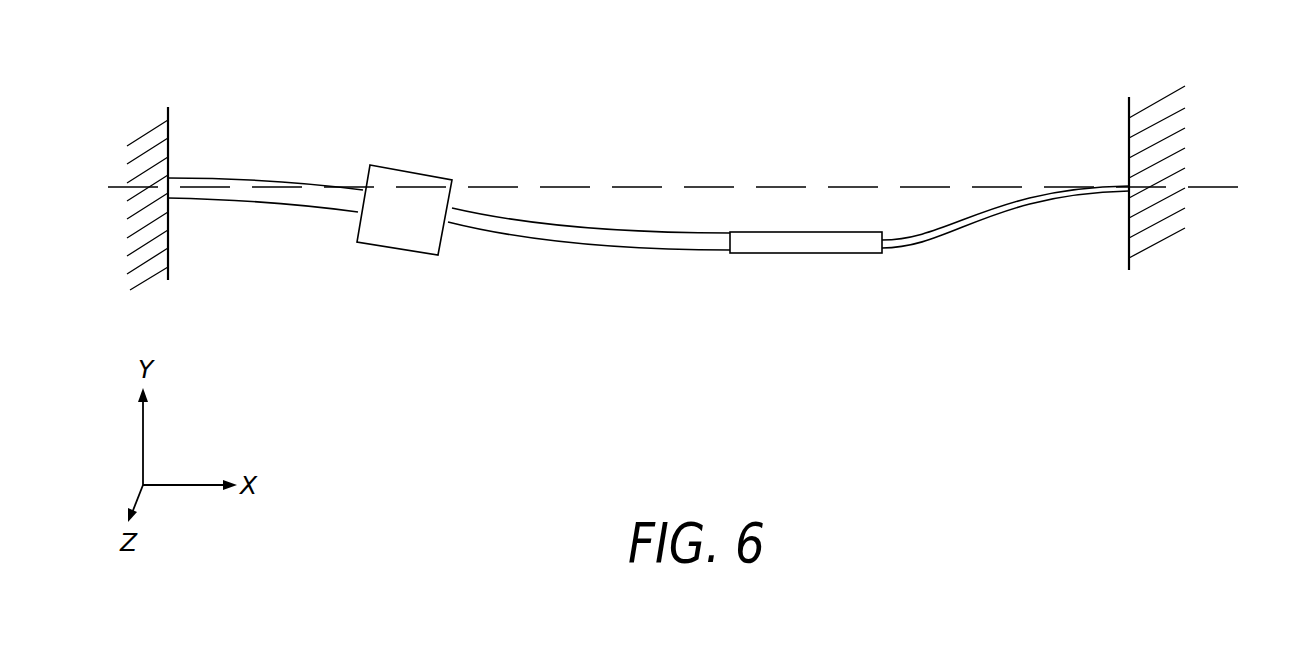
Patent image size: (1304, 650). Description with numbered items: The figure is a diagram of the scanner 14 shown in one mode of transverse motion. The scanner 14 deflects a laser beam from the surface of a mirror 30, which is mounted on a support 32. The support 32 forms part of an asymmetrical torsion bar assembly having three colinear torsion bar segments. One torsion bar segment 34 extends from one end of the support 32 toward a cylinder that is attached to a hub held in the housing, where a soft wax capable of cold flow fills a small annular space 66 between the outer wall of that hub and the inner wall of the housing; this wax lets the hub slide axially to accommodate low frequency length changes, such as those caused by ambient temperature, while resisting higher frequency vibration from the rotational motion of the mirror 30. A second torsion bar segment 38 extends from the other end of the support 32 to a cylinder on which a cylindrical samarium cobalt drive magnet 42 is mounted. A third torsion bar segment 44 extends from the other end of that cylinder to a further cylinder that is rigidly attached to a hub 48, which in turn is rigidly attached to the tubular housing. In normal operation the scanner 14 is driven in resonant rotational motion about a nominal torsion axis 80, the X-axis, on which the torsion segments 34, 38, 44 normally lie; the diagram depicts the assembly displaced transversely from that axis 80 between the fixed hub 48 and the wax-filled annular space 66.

The scanner 14 is at (963, 392).
The mirror 30 is at (806, 178).
The support 32 is at (784, 238).
The torsion bar segment 34 is at (973, 225).
The second torsion bar segment 38 is at (598, 233).
The cylindrical samarium cobalt drive magnet 42 is at (400, 198).
The third torsion bar segment 44 is at (243, 193).
The hub 48 is at (152, 121).
The annular space 66 is at (1185, 82).
The nominal torsion axis 80 is at (1215, 186).